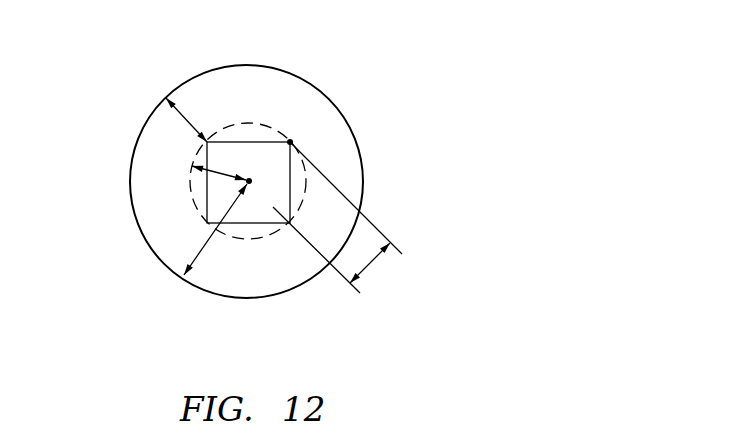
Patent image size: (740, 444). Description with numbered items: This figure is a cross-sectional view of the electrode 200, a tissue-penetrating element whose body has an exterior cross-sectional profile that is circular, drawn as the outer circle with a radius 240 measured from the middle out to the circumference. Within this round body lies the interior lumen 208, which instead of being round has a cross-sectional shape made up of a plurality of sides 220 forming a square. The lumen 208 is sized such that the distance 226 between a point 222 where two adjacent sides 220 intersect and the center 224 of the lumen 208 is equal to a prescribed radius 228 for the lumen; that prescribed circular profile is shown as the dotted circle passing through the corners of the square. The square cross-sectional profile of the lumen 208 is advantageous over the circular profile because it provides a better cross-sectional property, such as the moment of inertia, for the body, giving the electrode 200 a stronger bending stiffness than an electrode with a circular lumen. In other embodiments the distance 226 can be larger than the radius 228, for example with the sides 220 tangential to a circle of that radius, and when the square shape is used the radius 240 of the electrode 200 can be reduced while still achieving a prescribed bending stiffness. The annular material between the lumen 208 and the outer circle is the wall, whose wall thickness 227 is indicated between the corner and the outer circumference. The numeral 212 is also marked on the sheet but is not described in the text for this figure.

The electrode 200 is at (312, 42).
The interior lumen 208 is at (265, 210).
The cladding 212 is at (40, 9).
The sides 220 is at (257, 142).
The point of intersection 222 is at (290, 142).
The center 224 is at (249, 181).
The distance 226 is at (368, 260).
The wall thickness 227 is at (188, 122).
The prescribed radius 228 is at (224, 167).
The radius of the electrode 240 is at (198, 258).